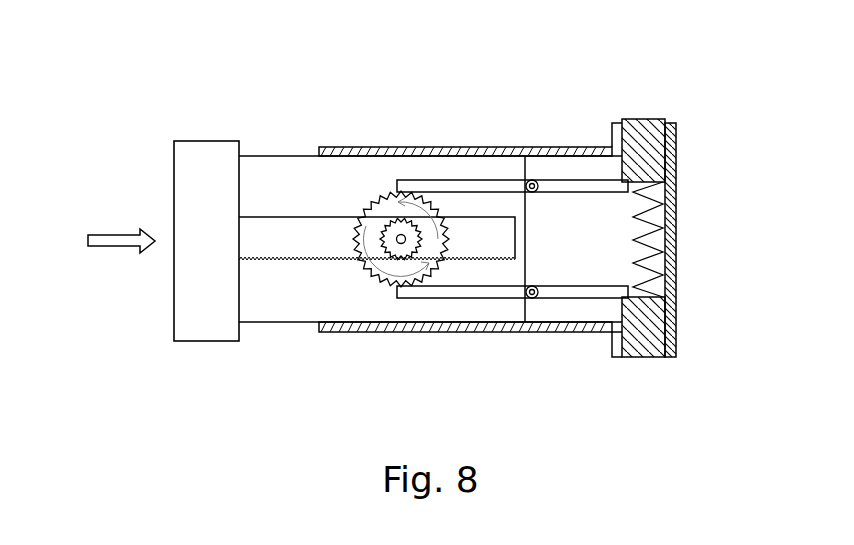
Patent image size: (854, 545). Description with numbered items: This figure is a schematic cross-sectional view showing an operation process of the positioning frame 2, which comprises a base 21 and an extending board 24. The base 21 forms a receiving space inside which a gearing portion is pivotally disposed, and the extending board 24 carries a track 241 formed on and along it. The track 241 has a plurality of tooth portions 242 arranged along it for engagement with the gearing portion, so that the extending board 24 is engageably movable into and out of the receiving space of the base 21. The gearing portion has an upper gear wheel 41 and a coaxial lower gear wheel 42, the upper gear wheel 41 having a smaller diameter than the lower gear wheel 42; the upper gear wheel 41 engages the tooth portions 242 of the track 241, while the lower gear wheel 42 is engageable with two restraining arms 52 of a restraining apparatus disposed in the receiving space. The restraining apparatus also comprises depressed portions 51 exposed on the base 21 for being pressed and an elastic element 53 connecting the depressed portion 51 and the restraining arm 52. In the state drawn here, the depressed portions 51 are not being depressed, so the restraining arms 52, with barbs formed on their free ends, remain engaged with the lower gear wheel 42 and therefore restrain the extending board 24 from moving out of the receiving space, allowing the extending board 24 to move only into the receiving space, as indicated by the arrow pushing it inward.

The positioning frame 2 is at (147, 80).
The extending board 24 is at (266, 165).
The track 241 is at (215, 405).
The tooth portions 242 is at (293, 258).
The lower gear wheel 42 is at (365, 208).
The upper gear wheel 41 is at (387, 220).
The restraining arms 52 is at (448, 182).
The base 21 is at (556, 152).
The depressed portions 51 is at (642, 120).
The elastic element 53 is at (655, 215).